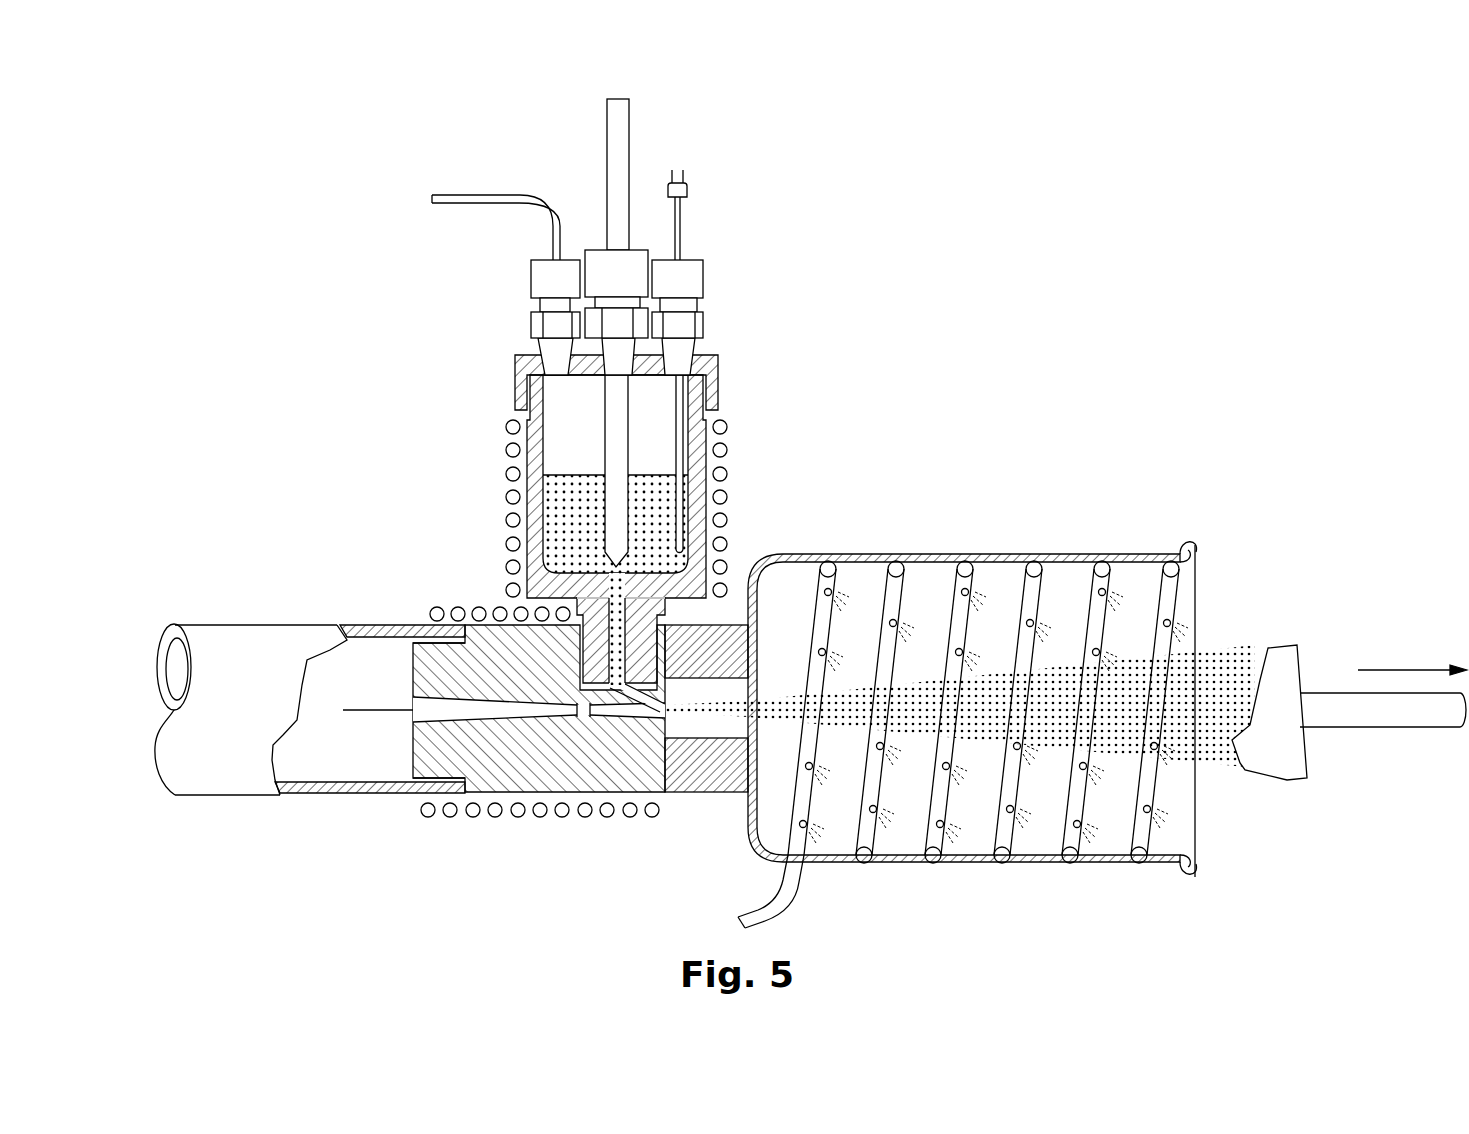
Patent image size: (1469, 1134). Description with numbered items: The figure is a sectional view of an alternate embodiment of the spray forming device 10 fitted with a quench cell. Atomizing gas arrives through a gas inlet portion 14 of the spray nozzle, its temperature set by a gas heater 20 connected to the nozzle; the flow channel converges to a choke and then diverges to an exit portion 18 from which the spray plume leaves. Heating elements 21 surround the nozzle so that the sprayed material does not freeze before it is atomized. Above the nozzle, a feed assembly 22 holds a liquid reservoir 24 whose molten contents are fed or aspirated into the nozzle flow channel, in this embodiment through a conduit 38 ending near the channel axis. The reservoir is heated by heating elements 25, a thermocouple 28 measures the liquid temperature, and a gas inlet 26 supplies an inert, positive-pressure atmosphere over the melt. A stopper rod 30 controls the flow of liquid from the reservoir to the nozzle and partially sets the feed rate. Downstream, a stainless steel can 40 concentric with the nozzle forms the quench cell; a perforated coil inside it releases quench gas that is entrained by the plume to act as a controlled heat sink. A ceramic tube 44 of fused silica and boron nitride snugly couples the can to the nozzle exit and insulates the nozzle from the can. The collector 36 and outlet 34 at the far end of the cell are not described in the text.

The spray forming device 10 is at (236, 322).
The gas inlet portion 14 is at (413, 722).
The exit portion 18 is at (648, 713).
The gas heater 20 is at (213, 624).
The heating elements 21 is at (573, 817).
The feed assembly 22 is at (760, 334).
The liquid reservoir 24 is at (544, 500).
The heating elements 25 is at (508, 518).
The gas inlet 26 is at (432, 193).
The thermocouple 28 is at (680, 507).
The stopper rod 30 is at (629, 120).
The output conduit 34 is at (1275, 780).
The deflector 36 is at (1250, 665).
The conduit 38 is at (715, 638).
The stainless steel can 40 is at (985, 554).
The ceramic tube 44 is at (697, 795).